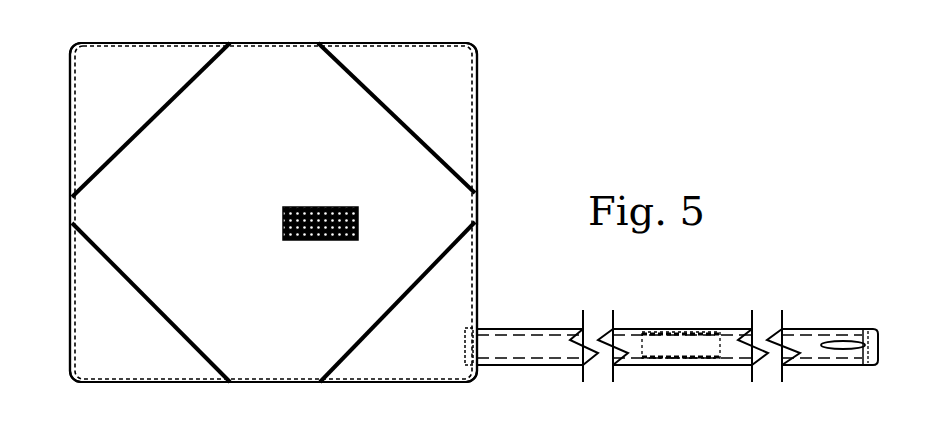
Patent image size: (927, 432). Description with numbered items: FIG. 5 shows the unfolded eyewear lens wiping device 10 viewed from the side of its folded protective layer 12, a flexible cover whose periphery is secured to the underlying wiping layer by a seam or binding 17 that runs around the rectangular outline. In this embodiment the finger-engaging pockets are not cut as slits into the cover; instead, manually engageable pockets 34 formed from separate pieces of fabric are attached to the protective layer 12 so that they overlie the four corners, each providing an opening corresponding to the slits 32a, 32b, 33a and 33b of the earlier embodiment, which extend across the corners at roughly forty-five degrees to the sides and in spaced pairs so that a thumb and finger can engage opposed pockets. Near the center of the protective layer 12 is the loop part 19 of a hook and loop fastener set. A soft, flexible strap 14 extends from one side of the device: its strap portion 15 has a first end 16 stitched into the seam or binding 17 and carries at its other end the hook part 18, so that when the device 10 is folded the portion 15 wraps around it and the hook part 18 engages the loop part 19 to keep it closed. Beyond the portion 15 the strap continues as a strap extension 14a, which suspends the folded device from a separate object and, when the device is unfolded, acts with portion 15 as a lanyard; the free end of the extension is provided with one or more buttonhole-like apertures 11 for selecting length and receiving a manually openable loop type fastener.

The folded eyewear lens wiping device 10 is at (521, 131).
The aperture 11 is at (842, 352).
The protective layer 12 is at (365, 57).
The strap 14 is at (737, 330).
The strap extension 14a is at (813, 330).
The strap portion 15 is at (552, 333).
The first end 16 is at (478, 345).
The seam or binding 17 is at (478, 182).
The hook part 18 is at (687, 347).
The loop part 19 is at (315, 240).
The slit 32a is at (440, 265).
The slit 32b is at (145, 118).
The slit 33a is at (138, 295).
The slit 33b is at (410, 122).
The manually engageable pockets 34 is at (105, 73).